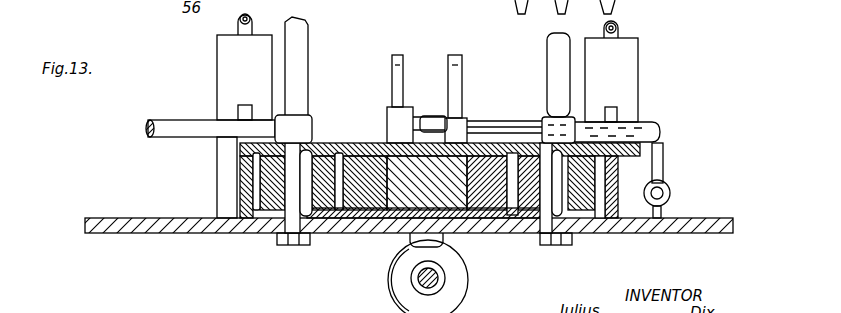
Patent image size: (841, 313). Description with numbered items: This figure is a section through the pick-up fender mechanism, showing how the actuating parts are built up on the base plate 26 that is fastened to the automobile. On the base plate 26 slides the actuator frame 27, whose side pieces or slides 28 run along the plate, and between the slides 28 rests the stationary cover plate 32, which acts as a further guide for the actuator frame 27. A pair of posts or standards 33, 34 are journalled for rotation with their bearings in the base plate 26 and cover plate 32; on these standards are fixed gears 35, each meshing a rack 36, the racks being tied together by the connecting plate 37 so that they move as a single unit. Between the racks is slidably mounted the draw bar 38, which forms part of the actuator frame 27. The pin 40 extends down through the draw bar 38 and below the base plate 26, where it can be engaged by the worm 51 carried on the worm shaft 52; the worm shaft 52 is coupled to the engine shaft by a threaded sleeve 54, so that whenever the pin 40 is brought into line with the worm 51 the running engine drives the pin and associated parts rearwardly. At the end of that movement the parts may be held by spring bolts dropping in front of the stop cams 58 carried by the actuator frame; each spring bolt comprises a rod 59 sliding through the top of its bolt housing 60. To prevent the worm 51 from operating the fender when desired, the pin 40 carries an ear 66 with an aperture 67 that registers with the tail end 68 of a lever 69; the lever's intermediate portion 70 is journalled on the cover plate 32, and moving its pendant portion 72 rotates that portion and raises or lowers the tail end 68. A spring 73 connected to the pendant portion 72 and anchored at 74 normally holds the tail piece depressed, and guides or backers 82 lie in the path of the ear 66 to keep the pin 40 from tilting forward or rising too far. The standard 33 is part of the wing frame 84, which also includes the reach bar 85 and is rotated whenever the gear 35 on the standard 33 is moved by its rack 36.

The base plate 26 is at (130, 234).
The actuator frame 27 is at (230, 173).
The slides 28 is at (240, 187).
The cover plate 32 is at (320, 142).
The standard 33 is at (310, 46).
The standard 34 is at (547, 58).
The gears 35 is at (283, 236).
The rack 36 is at (500, 147).
The connecting plate 37 is at (382, 213).
The draw bar 38 is at (447, 200).
The pin 40 is at (400, 248).
The worm 51 is at (393, 302).
The worm shaft 52 is at (440, 278).
The sleeve 54 is at (250, 21).
The stop cams 58 is at (238, 112).
The rod 59 is at (620, 28).
The bolt housing 60 is at (217, 53).
The ear 66 is at (410, 110).
The aperture 67 is at (427, 118).
The tail end 68 is at (430, 132).
The lever 69 is at (491, 116).
The intermediate portion 70 is at (512, 124).
The pendant portion 72 is at (663, 163).
The spring 73 is at (670, 193).
The anchor 74 is at (662, 216).
The guides 82 is at (392, 72).
The wing frame 84 is at (158, 113).
The reach bar 85 is at (152, 137).